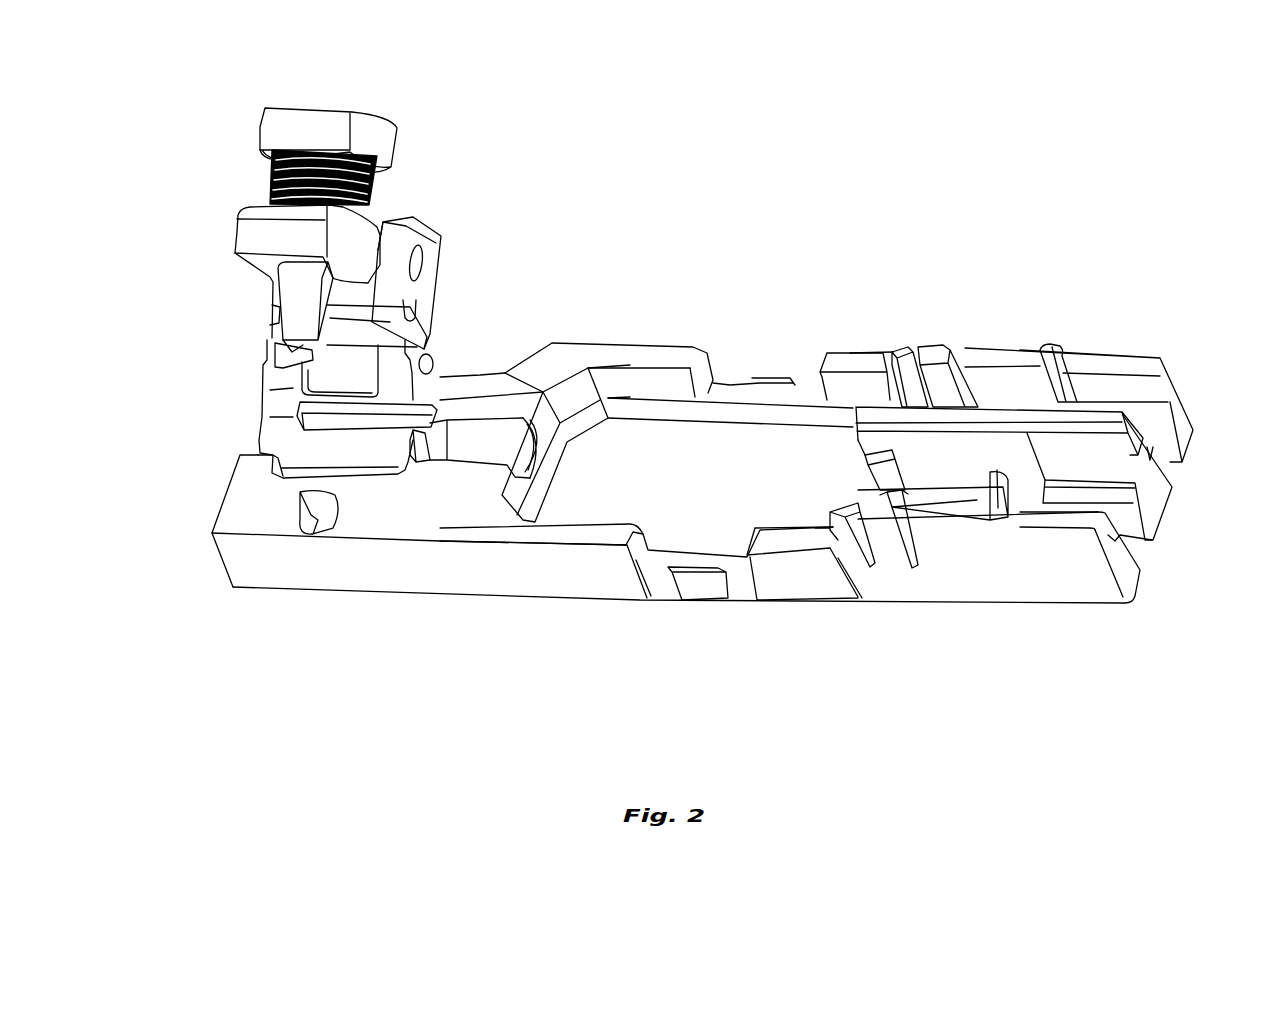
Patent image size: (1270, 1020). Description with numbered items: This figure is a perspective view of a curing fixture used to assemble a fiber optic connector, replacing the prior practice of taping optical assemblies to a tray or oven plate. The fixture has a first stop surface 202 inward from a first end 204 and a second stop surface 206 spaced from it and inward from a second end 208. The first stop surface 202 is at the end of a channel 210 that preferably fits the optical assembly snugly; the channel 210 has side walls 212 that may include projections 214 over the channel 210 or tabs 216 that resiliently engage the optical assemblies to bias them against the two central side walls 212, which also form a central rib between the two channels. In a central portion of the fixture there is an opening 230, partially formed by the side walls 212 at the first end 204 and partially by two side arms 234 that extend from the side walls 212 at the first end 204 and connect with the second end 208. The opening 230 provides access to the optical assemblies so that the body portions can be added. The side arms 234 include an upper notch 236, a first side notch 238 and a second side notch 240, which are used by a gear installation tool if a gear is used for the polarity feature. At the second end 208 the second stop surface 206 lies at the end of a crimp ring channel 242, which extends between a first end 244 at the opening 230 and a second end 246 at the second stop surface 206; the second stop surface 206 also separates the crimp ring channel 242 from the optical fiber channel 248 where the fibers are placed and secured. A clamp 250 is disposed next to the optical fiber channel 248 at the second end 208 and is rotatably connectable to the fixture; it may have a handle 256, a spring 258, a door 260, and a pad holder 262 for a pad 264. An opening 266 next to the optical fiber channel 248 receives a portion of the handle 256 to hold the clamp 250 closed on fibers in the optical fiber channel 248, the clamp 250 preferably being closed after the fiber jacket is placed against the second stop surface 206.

The first stop surface 202 is at (1135, 483).
The first end 204 is at (1132, 618).
The second stop surface 206 is at (433, 403).
The second end 208 is at (217, 550).
The channel 210 is at (1148, 387).
The side walls 212 is at (1113, 353).
The projections 214 is at (1047, 347).
The tabs 216 is at (936, 347).
The opening 230 is at (602, 448).
The side arms 234 is at (663, 343).
The upper notch 236 is at (652, 548).
The first side notch 238 is at (737, 383).
The second side notch 240 is at (812, 388).
The crimp ring channel 242 is at (497, 437).
The first end of crimp ring channel 244 is at (530, 460).
The second end of crimp ring channel 246 is at (412, 462).
The optical fiber channel 248 is at (277, 440).
The clamp 250 is at (432, 120).
The handle 256 is at (260, 135).
The spring 258 is at (272, 178).
The door 260 is at (238, 240).
The pad holder 262 is at (440, 260).
The pad 264 is at (420, 337).
The opening 266 is at (300, 530).